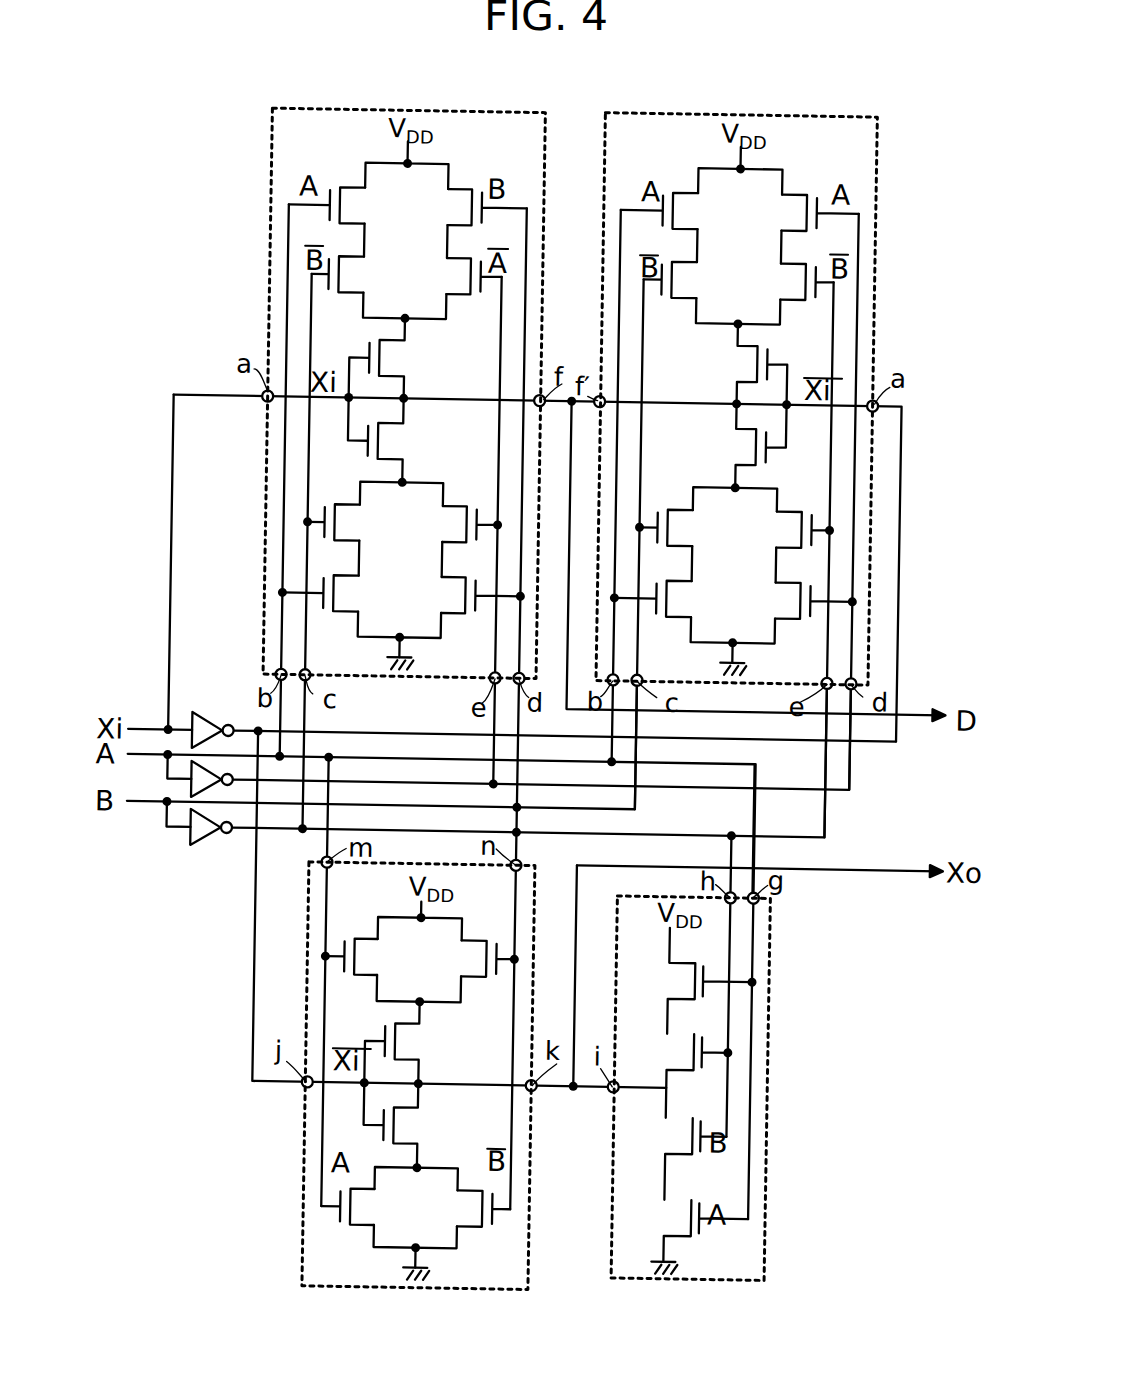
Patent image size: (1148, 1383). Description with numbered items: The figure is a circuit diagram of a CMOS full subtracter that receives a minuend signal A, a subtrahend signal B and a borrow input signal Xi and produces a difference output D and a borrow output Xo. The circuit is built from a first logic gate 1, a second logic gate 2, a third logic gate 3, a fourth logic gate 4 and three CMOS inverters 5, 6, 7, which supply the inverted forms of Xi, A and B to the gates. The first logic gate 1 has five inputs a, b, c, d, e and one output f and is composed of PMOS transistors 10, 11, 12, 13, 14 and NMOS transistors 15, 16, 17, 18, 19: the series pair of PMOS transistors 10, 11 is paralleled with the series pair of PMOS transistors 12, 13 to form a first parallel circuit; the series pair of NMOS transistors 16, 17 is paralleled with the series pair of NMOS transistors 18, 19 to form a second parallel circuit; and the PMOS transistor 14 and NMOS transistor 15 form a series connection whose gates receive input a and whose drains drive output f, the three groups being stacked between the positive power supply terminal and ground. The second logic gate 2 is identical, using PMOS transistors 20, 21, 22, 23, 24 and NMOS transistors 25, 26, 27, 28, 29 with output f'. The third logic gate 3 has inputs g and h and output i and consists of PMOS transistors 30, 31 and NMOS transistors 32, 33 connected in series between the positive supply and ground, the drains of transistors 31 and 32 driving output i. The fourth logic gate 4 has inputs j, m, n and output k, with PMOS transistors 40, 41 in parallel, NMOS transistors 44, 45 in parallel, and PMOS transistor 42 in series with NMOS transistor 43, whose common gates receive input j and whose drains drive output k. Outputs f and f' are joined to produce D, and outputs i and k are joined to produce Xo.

The first logic gate 1 is at (535, 216).
The second logic gate 2 is at (867, 220).
The third logic gate 3 is at (773, 1012).
The fourth logic gate 4 is at (537, 1166).
The CMOS inverter 5 is at (208, 720).
The CMOS inverter 6 is at (192, 800).
The CMOS inverter 7 is at (206, 851).
The PMOS transistor 10 is at (350, 223).
The PMOS transistor 11 is at (350, 290).
The PMOS transistor 12 is at (450, 220).
The PMOS transistor 13 is at (450, 290).
The PMOS transistor 14 is at (398, 374).
The NMOS transistor 15 is at (398, 430).
The NMOS transistor 16 is at (354, 510).
The NMOS transistor 17 is at (355, 580).
The NMOS transistor 18 is at (454, 510).
The NMOS transistor 19 is at (456, 580).
The PMOS transistor 20 is at (683, 220).
The PMOS transistor 21 is at (683, 290).
The PMOS transistor 22 is at (780, 220).
The PMOS transistor 23 is at (780, 290).
The PMOS transistor 24 is at (734, 378).
The NMOS transistor 25 is at (734, 430).
The NMOS transistor 26 is at (688, 510).
The NMOS transistor 27 is at (689, 580).
The NMOS transistor 28 is at (785, 510).
The NMOS transistor 29 is at (786, 580).
The PMOS transistor 30 is at (692, 992).
The PMOS transistor 31 is at (692, 1064).
The NMOS transistor 32 is at (686, 1148).
The NMOS transistor 33 is at (687, 1226).
The PMOS transistor 40 is at (371, 976).
The PMOS transistor 41 is at (467, 976).
The PMOS transistor 42 is at (417, 1062).
The NMOS transistor 43 is at (417, 1114).
The NMOS transistor 44 is at (372, 1198).
The NMOS transistor 45 is at (470, 1198).